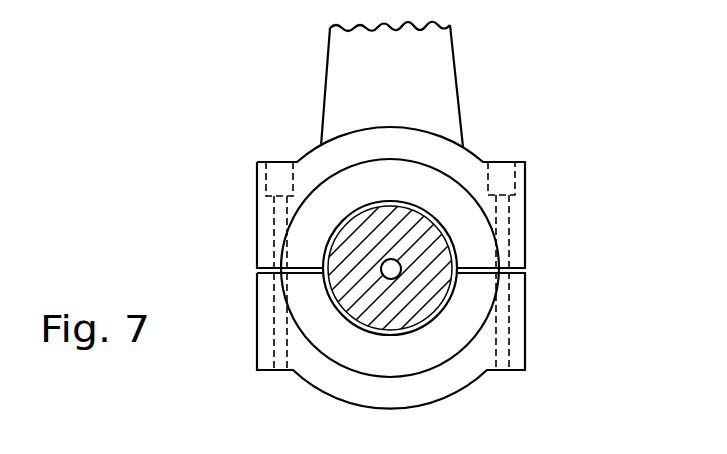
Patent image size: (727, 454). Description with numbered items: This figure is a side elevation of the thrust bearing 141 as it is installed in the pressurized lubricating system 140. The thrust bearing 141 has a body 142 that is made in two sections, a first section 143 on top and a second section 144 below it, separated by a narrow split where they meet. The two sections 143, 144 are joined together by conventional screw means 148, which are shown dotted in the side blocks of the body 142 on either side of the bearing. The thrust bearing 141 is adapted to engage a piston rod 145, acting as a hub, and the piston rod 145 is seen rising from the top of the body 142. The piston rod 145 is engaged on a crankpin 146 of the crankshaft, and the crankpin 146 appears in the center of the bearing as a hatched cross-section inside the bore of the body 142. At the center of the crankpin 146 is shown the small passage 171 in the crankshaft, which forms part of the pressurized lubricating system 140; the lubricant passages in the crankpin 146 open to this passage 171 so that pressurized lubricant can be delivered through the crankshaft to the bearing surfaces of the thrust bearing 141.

The pressurized lubricating system 140 is at (417, 268).
The thrust bearing 141 is at (393, 268).
The body 142 is at (517, 287).
The first section 143 is at (257, 238).
The second section 144 is at (257, 338).
The piston rod 145 is at (440, 62).
The crankpin 146 is at (380, 225).
The screw means 148 is at (257, 172).
The passage 171 is at (386, 276).